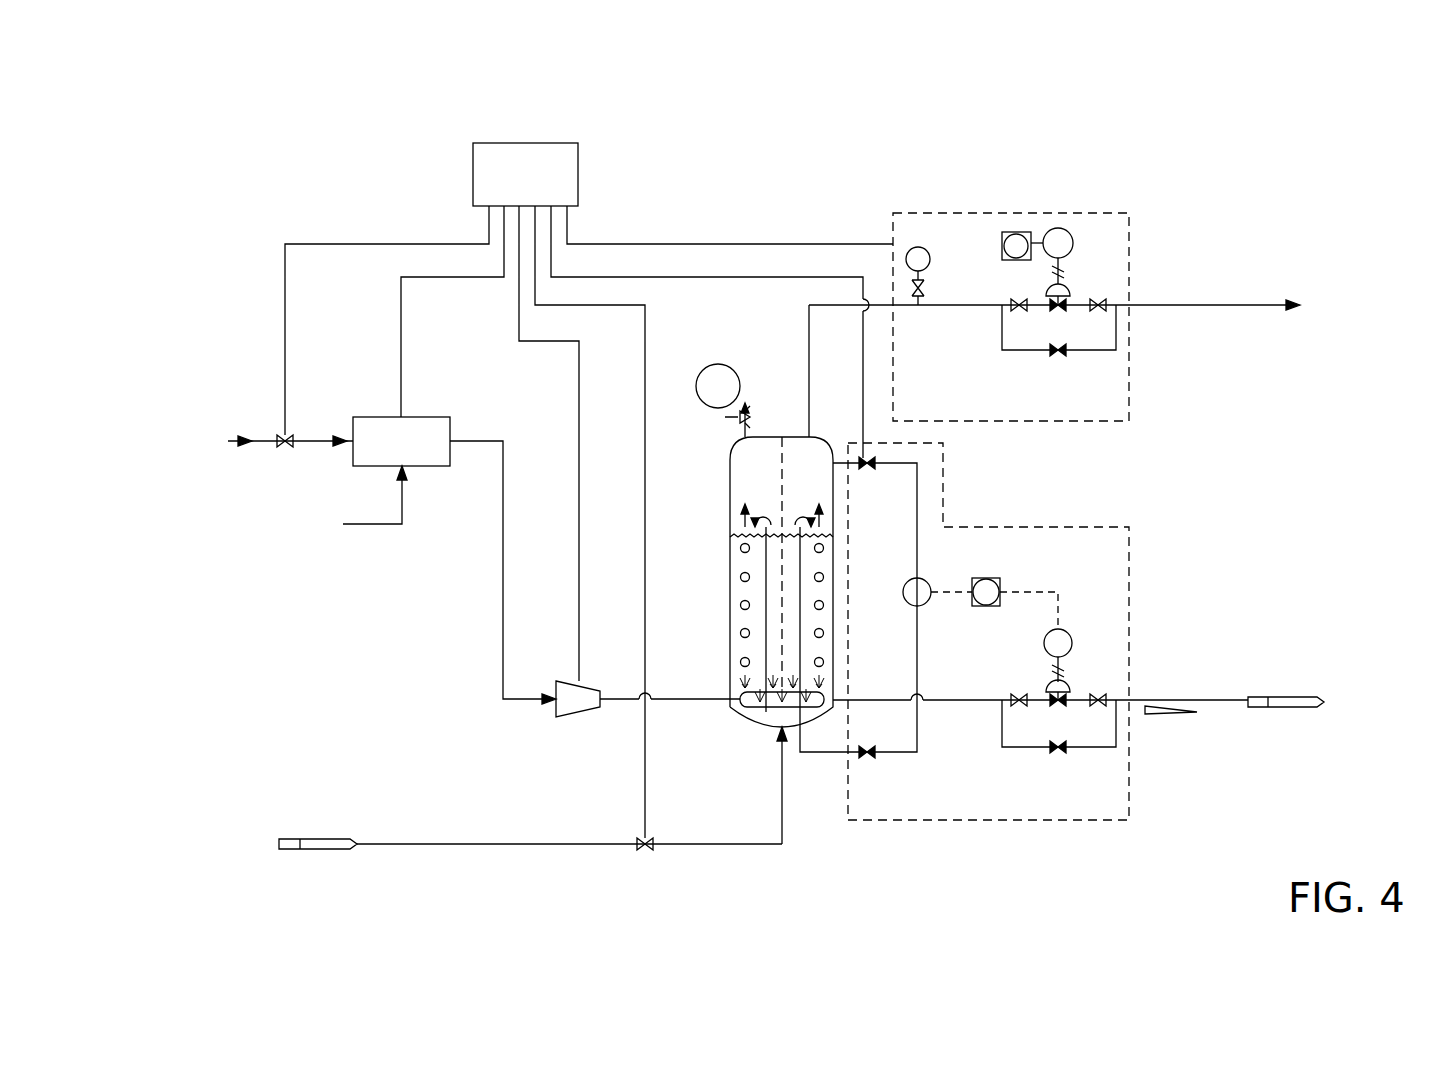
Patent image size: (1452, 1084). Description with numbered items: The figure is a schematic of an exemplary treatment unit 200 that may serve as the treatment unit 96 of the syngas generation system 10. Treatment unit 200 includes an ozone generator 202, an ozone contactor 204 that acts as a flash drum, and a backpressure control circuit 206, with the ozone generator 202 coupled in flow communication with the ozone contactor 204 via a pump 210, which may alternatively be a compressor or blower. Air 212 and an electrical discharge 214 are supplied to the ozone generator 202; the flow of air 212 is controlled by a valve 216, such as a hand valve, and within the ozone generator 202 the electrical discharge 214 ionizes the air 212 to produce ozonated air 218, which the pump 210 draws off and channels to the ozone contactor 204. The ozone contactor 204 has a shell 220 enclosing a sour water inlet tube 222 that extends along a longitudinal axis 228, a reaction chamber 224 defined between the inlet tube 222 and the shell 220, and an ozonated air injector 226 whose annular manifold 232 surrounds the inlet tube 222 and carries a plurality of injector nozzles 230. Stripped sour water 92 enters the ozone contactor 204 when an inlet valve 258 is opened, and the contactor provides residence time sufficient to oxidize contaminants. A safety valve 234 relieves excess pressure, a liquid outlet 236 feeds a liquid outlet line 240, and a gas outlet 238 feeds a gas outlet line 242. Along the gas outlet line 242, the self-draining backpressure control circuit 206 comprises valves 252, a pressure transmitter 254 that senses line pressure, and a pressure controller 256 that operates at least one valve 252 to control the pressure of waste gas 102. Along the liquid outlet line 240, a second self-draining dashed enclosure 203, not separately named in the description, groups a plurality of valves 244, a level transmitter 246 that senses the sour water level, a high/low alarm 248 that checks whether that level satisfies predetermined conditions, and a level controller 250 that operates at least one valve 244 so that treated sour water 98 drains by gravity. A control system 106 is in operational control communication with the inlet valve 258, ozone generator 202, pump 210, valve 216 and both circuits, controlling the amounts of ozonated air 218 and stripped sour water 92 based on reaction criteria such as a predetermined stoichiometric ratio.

The syngas generation system 10 is at (1355, 185).
The stripped sour water 92 is at (382, 845).
The treatment unit 96 is at (1365, 221).
The treated sour water 98 is at (1217, 702).
The waste gas 102 is at (1224, 305).
The control system 106 is at (589, 490).
The treatment unit 200 is at (1250, 200).
The ozone generator 202 is at (425, 466).
The self-draining drain assembly 203 is at (985, 820).
The ozone contactor 204 is at (746, 712).
The backpressure control circuit 206 is at (1100, 213).
The pump 210 is at (556, 705).
The air 212 is at (264, 437).
The electrical discharge 214 is at (374, 524).
The valve 216 is at (272, 435).
The ozonated air 218 is at (503, 613).
The shell 220 is at (730, 485).
The sour water inlet tube 222 is at (770, 562).
The reaction chamber 224 is at (747, 592).
The ozonated air injector 226 is at (730, 683).
The longitudinal axis 228 is at (785, 437).
The injector nozzle 230 is at (780, 745).
The annular manifold 232 is at (740, 707).
The safety valve 234 is at (699, 406).
The liquid outlet 236 is at (835, 697).
The gas outlet 238 is at (812, 439).
The liquid outlet line 240 is at (948, 700).
The gas outlet line 242 is at (1150, 305).
The valves 244 is at (868, 470).
The level transmitter 246 is at (906, 580).
The high/low alarm 248 is at (978, 578).
The level controller 250 is at (1068, 632).
The valves 252 is at (1011, 302).
The pressure transmitter 254 is at (924, 250).
The pressure controller 256 is at (1073, 234).
The inlet valve 258 is at (648, 838).